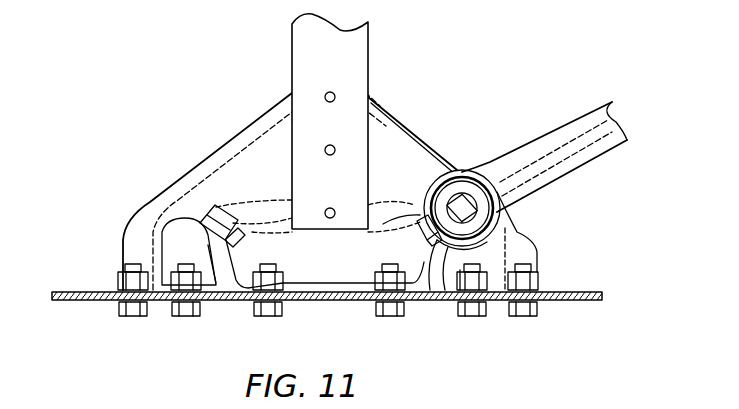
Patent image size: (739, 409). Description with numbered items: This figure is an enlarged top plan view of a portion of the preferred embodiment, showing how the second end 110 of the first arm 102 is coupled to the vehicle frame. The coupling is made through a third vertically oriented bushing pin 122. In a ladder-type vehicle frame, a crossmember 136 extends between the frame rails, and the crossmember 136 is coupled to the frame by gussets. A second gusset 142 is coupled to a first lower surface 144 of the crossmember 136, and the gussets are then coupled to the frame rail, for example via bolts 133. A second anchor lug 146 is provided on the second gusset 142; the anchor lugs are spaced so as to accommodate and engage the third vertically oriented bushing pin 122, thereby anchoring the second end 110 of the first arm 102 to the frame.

The first arm 102 is at (567, 167).
The second end 110 is at (477, 158).
The third vertically oriented bushing pin 122 is at (517, 232).
The bolts 133 is at (119, 278).
The crossmember 136 is at (363, 62).
The second gusset 142 is at (418, 138).
The first lower surface 144 is at (303, 186).
The second anchor lug 146 is at (428, 244).